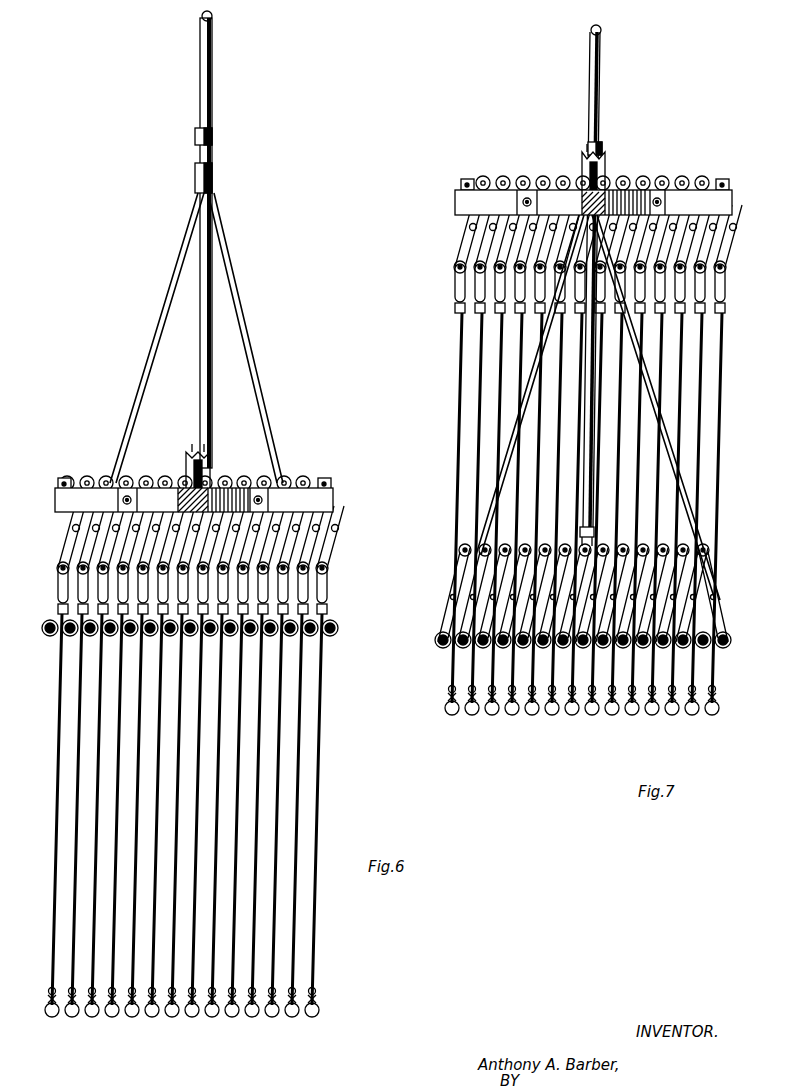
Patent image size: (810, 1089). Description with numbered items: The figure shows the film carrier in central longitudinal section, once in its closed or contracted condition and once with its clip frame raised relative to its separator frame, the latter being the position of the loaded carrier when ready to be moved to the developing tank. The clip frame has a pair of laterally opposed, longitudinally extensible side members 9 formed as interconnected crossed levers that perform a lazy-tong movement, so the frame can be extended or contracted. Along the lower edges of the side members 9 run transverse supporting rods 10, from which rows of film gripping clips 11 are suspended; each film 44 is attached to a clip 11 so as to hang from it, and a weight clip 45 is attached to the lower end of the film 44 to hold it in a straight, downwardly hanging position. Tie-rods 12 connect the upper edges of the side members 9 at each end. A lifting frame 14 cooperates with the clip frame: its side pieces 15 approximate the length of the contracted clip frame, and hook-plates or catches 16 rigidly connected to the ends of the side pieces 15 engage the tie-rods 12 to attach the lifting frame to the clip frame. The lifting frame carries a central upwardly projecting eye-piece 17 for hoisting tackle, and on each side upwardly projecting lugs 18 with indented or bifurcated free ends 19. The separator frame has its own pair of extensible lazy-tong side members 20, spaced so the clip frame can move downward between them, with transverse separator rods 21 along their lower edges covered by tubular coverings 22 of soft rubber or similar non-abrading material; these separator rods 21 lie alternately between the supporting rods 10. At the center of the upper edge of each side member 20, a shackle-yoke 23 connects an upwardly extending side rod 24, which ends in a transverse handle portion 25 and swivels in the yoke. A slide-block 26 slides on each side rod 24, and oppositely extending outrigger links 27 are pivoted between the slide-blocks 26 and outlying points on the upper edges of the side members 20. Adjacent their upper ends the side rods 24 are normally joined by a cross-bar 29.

In FIG. 6, the side members 9 is at (67, 537).
In FIG. 7, the side members 9 is at (470, 240).
In FIG. 6, the transverse supporting rods 10 is at (60, 574).
In FIG. 7, the transverse supporting rods 10 is at (458, 272).
In FIG. 6, the film gripping devices or clips 11 is at (58, 608).
In FIG. 7, the film gripping devices or clips 11 is at (460, 307).
In FIG. 6, the tie-rods 12 is at (70, 478).
In FIG. 7, the tie-rods 12 is at (468, 183).
In FIG. 6, the lifting frame 14 is at (222, 490).
In FIG. 7, the lifting frame 14 is at (612, 195).
In FIG. 6, the side pieces 15 is at (118, 490).
In FIG. 7, the side pieces 15 is at (462, 205).
In FIG. 6, the hook-plates or catches 16 is at (58, 484).
In FIG. 7, the hook-plates or catches 16 is at (466, 179).
In FIG. 6, the eye-piece 17 is at (208, 490).
In FIG. 7, the eye-piece 17 is at (608, 196).
In FIG. 6, the lugs 18 is at (189, 462).
In FIG. 7, the lugs 18 is at (601, 170).
In FIG. 6, the bifurcated free ends 19 is at (194, 452).
In FIG. 7, the bifurcated free ends 19 is at (584, 158).
In FIG. 6, the side members 20 is at (334, 624).
In FIG. 7, the side members 20 is at (468, 566).
In FIG. 6, the transverse separator rods 21 is at (68, 630).
In FIG. 7, the transverse separator rods 21 is at (460, 646).
In FIG. 6, the tubular covering 22 is at (48, 632).
In FIG. 7, the tubular covering 22 is at (446, 649).
In FIG. 7, the shackle-yoke 23 is at (594, 531).
In FIG. 6, the side rod 24 is at (212, 72).
In FIG. 7, the side rod 24 is at (601, 75).
In FIG. 6, the transverse handle portion 25 is at (212, 16).
In FIG. 7, the transverse handle portion 25 is at (601, 30).
In FIG. 6, the slide-block 26 is at (212, 175).
In FIG. 6, the outrigger links 27 is at (185, 228).
In FIG. 7, the outrigger links 27 is at (526, 392).
In FIG. 6, the cross-bar 29 is at (212, 135).
In FIG. 7, the cross-bar 29 is at (603, 148).
In FIG. 6, the tooth 44 is at (316, 823).
In FIG. 7, the tooth 44 is at (457, 495).
In FIG. 6, the weight clip 45 is at (192, 1018).
In FIG. 7, the weight clip 45 is at (612, 716).